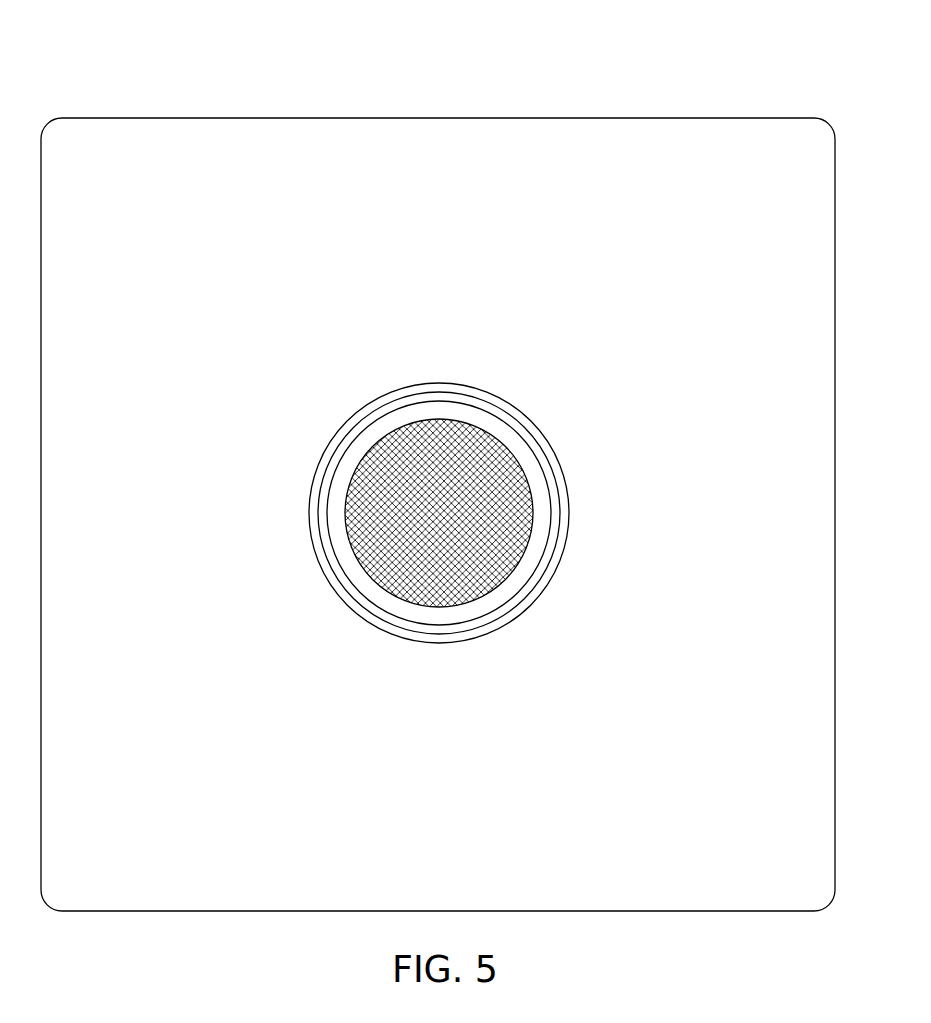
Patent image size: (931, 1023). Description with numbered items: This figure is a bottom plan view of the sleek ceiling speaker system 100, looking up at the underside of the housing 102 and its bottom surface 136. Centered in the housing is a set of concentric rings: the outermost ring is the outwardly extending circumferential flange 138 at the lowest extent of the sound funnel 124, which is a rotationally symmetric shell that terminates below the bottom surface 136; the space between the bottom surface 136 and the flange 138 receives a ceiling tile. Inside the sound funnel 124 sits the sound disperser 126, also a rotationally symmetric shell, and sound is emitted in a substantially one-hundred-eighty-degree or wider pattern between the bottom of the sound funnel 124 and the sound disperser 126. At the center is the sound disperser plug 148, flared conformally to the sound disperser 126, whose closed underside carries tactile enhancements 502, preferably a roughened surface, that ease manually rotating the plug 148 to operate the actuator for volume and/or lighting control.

The sleek ceiling speaker system 100 is at (175, 67).
The housing 102 is at (357, 142).
The bottom surface 136 is at (642, 168).
The circumferential flange 138 is at (345, 425).
The sound funnel 124 is at (321, 533).
The sound disperser plug 148 is at (408, 617).
The sound disperser 126 is at (537, 532).
The tactile enhancements 502 is at (487, 595).